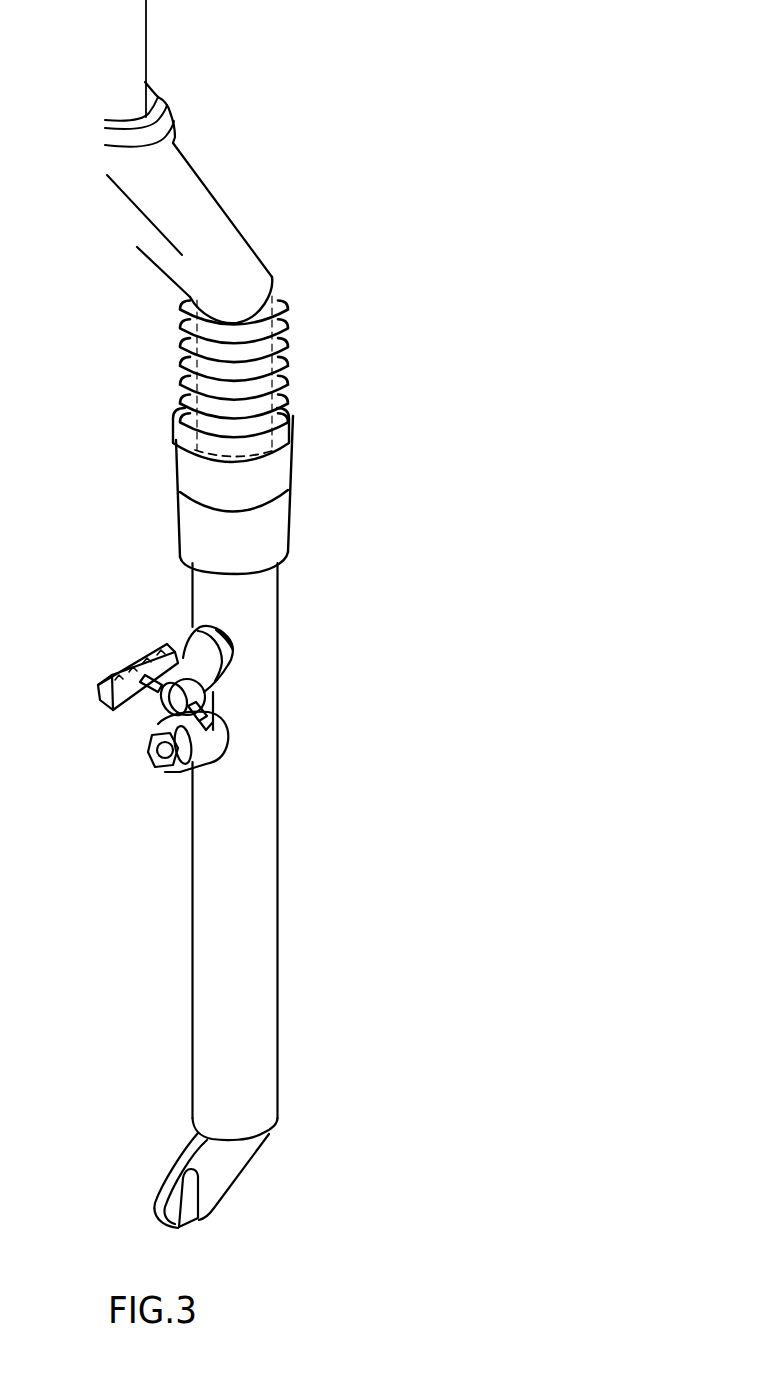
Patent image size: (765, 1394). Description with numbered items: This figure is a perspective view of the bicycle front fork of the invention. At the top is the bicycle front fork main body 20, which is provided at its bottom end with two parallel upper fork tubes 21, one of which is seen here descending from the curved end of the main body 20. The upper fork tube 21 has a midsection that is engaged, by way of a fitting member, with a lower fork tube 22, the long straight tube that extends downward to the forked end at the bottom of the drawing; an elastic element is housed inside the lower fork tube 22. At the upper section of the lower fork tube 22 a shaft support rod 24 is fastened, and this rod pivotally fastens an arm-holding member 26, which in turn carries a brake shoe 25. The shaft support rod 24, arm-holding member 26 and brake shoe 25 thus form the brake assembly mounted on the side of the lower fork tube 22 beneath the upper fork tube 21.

The bicycle front fork main body 20 is at (135, 63).
The upper fork tube 21 is at (272, 382).
The lower fork tube 22 is at (267, 942).
The shaft support rod 24 is at (160, 760).
The brake shoe 25 is at (110, 680).
The arm-holding member 26 is at (212, 664).